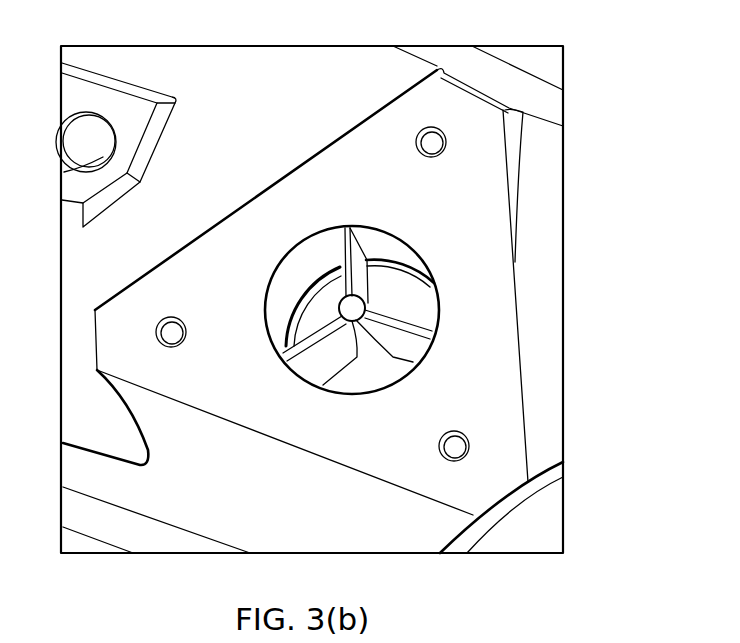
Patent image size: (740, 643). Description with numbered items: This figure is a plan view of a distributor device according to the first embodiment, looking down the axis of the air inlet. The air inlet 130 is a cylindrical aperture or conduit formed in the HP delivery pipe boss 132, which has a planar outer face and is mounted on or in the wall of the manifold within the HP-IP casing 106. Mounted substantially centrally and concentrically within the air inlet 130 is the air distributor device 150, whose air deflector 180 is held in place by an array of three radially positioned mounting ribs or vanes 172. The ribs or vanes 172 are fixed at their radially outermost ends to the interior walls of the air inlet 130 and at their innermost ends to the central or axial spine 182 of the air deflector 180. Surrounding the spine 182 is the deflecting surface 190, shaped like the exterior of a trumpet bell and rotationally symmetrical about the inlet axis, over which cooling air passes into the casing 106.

The HP-IP casing 106 is at (95, 72).
The air inlet 130 is at (310, 265).
The HP delivery pipe boss 132 is at (508, 397).
The air distributor device 150 is at (402, 305).
The mounting ribs or vanes 172 is at (360, 258).
The air deflector 180 is at (308, 318).
The central or axial spine 182 is at (348, 302).
The deflecting surface 190 is at (392, 275).